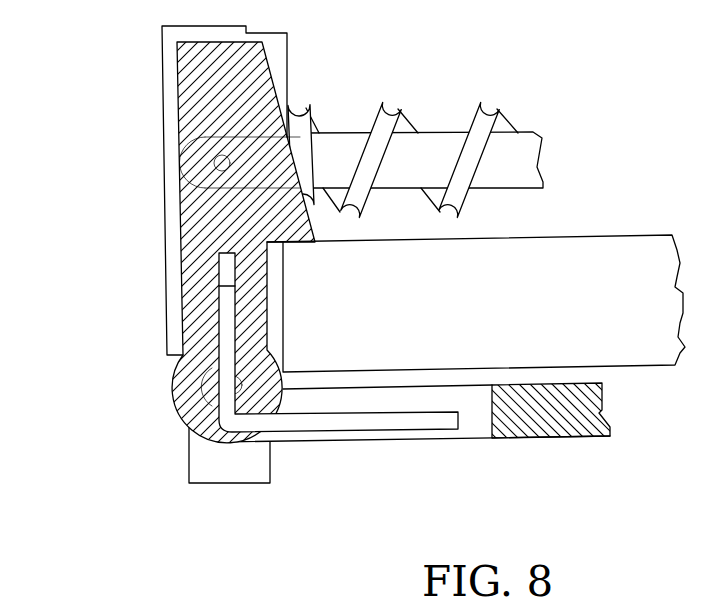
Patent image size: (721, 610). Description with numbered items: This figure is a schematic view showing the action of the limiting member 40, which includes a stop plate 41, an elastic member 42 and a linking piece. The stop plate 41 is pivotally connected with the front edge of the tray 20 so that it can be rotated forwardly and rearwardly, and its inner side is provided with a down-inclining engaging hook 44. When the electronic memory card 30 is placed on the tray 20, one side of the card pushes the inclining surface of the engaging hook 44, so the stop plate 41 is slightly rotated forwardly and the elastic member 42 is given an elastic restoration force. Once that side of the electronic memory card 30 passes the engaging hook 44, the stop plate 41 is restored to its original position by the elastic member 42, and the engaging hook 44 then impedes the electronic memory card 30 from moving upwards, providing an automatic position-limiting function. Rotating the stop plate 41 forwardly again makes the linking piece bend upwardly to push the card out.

The tray 20 is at (540, 427).
The electronic memory card 30 is at (595, 255).
The limiting member 40 is at (157, 90).
The stop plate 41 is at (172, 138).
The elastic member 42 is at (490, 110).
The engaging hook 44 is at (262, 83).